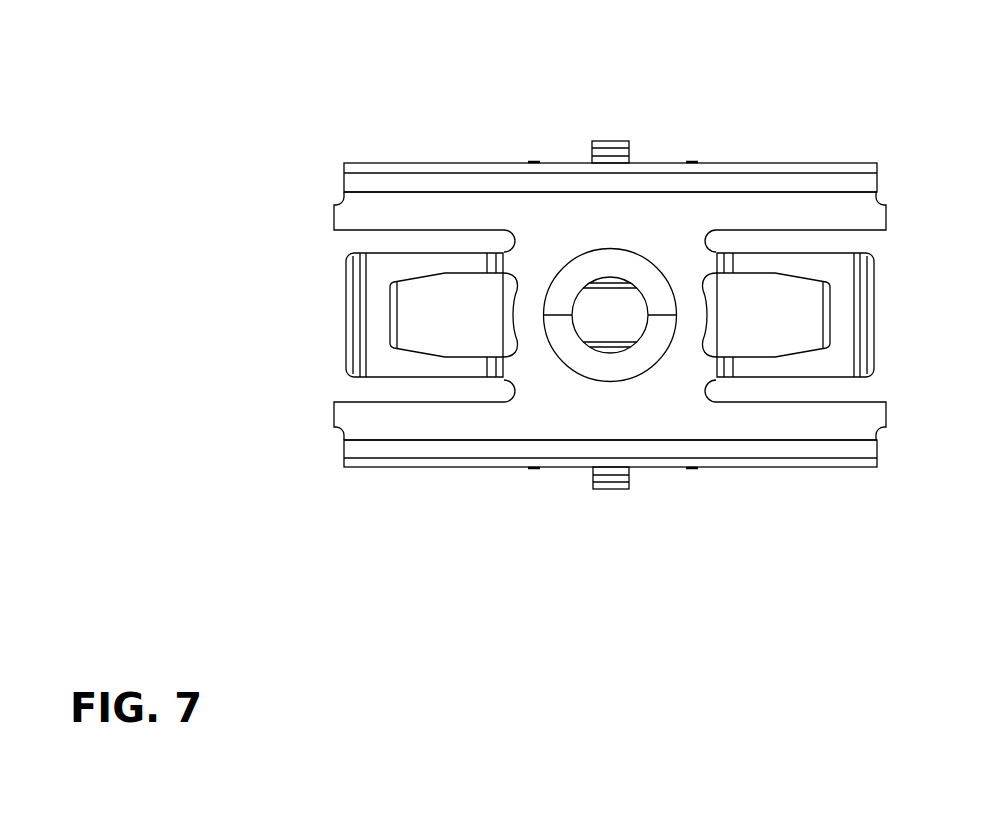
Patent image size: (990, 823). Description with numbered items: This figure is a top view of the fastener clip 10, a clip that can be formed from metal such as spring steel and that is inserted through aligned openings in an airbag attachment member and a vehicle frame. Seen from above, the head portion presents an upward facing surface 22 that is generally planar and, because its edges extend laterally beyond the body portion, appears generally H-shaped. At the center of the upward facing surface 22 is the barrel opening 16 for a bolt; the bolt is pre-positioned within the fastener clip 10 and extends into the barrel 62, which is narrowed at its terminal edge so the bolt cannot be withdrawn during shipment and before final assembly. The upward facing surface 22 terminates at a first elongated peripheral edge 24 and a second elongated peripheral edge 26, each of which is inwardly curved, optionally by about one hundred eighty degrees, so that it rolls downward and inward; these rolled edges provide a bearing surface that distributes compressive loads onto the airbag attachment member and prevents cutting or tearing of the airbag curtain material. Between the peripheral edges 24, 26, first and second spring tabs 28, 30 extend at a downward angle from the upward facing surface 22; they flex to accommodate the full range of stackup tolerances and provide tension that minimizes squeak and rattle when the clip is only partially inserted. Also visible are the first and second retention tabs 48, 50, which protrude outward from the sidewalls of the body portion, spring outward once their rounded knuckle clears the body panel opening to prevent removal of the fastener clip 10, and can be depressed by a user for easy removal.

The fastener clip 10 is at (460, 100).
The barrel opening 16 is at (585, 381).
The upward facing surface 22 is at (651, 212).
The first elongated peripheral edge 24 is at (792, 468).
The second elongated peripheral edge 26 is at (797, 163).
The first spring tab 28 is at (346, 305).
The second spring tab 30 is at (873, 313).
The first retention tab 48 is at (613, 491).
The second retention tab 50 is at (608, 140).
The barrel 62 is at (566, 338).